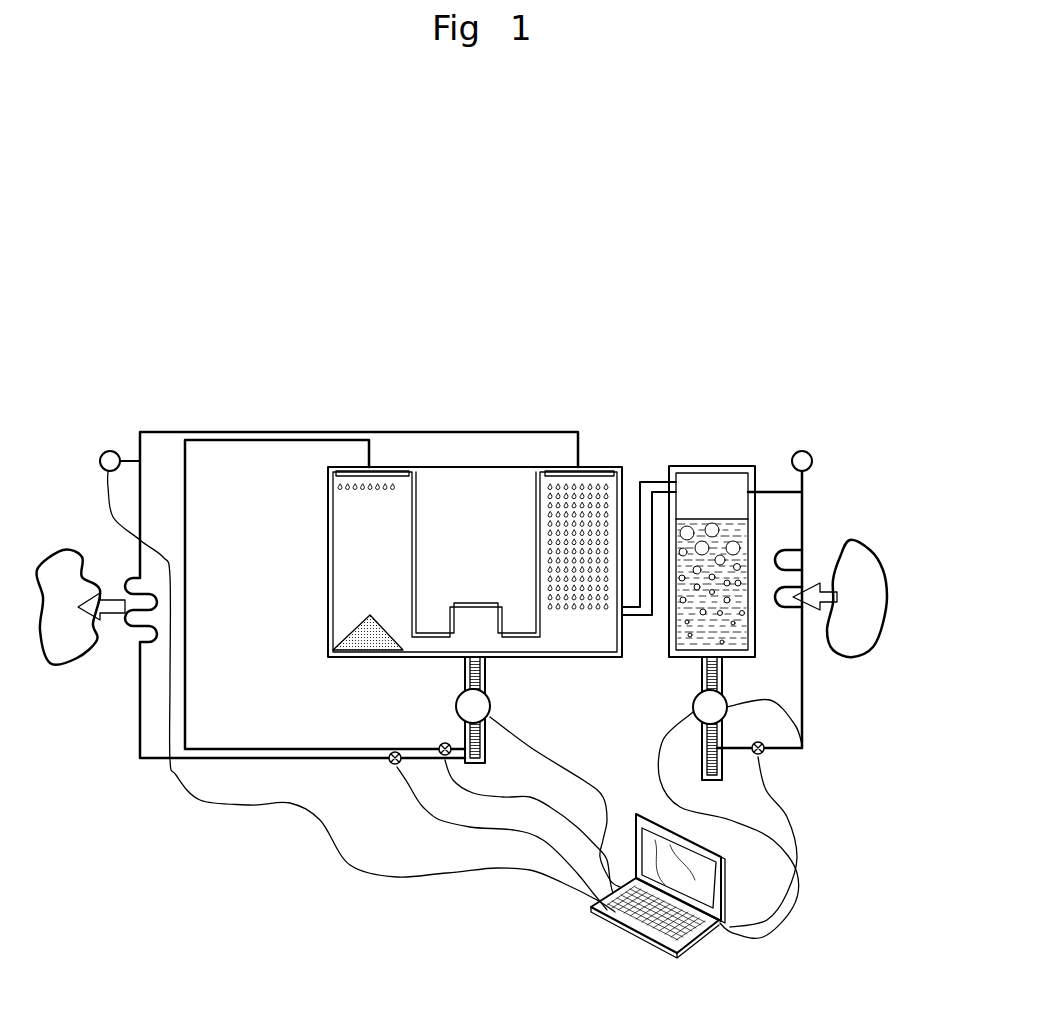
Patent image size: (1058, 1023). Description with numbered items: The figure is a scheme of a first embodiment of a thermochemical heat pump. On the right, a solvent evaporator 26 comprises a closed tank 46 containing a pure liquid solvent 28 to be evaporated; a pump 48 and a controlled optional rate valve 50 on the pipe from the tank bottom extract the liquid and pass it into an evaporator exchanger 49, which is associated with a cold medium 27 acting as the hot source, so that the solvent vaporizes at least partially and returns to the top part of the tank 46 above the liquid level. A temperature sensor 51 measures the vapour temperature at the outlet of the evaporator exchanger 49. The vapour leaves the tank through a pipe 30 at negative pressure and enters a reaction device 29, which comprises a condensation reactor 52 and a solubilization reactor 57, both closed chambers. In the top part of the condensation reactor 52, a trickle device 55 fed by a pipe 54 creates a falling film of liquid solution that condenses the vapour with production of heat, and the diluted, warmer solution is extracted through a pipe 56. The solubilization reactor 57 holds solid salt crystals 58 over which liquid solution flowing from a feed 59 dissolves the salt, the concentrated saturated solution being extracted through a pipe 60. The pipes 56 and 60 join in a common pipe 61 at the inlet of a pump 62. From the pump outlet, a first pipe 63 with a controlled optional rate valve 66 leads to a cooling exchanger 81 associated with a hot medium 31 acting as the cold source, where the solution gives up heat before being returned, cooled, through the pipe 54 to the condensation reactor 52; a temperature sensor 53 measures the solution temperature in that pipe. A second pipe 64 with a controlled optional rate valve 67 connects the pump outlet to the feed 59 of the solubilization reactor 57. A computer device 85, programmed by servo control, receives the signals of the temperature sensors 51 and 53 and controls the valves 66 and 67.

The solvent evaporator 26 is at (766, 525).
The cold medium 27 is at (860, 577).
The pure liquid solvent 28 is at (738, 635).
The reaction device 29 is at (432, 471).
The pipe 30 is at (645, 530).
The hot medium 31 is at (57, 570).
The closed tank 46 is at (728, 468).
The pump 48 is at (802, 752).
The evaporator exchanger 49 is at (802, 570).
The controlled optional rate valve 50 is at (762, 753).
The temperature sensor 51 is at (807, 453).
The condensation reactor 52 is at (563, 537).
The temperature sensor 53 is at (110, 452).
The pipe 54 is at (482, 430).
The trickle device 55 is at (585, 473).
The pipe 56 is at (522, 650).
The solubilization reactor 57 is at (353, 540).
The solid salt crystals 58 is at (363, 631).
The feed 59 is at (377, 473).
The pipe 60 is at (427, 650).
The common pipe 61 is at (477, 676).
The pump 62 is at (485, 708).
The first pipe 63 is at (160, 760).
The second pipe 64 is at (183, 720).
The controlled optional rate valve 66 is at (390, 763).
The controlled optional rate valve 67 is at (437, 763).
The cooling exchanger 81 is at (123, 620).
The computer device 85 is at (680, 927).